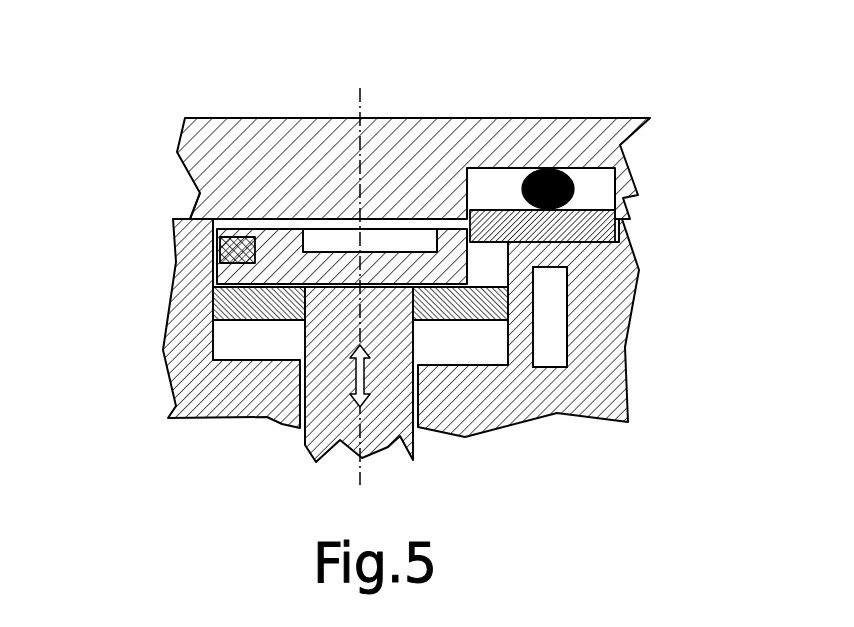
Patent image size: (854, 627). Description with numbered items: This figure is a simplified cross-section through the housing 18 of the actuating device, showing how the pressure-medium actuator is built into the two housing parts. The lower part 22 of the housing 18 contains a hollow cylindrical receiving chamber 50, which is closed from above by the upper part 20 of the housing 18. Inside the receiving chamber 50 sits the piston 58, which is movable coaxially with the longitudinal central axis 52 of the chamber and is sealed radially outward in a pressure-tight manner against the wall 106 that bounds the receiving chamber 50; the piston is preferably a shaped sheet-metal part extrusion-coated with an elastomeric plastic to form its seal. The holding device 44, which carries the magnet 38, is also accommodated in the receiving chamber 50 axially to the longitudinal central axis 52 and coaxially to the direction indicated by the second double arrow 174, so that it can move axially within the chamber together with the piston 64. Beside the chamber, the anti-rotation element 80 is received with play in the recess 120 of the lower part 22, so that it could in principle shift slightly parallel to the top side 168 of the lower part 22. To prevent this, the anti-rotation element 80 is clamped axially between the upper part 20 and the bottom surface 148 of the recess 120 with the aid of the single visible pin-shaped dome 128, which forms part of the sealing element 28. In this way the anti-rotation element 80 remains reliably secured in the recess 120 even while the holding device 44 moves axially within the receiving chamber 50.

The housing 18 is at (136, 203).
The upper part of the housing 20 is at (241, 118).
The lower part of the housing 22 is at (625, 368).
The sealing element 28 is at (661, 180).
The pin-shaped dome 128 is at (575, 185).
The magnet 38 is at (218, 250).
The holding device 44 is at (222, 266).
The receiving chamber 50 is at (496, 349).
The longitudinal central axis 52 is at (361, 100).
The piston 58 is at (215, 300).
The piston 64 is at (413, 440).
The anti-rotation element 80 is at (638, 273).
The wall 106 is at (523, 320).
The recess 120 is at (632, 235).
The bottom surface of the recess 148 is at (519, 227).
The top side of the lower part of the housing 168 is at (188, 201).
The second double arrow 174 is at (353, 377).